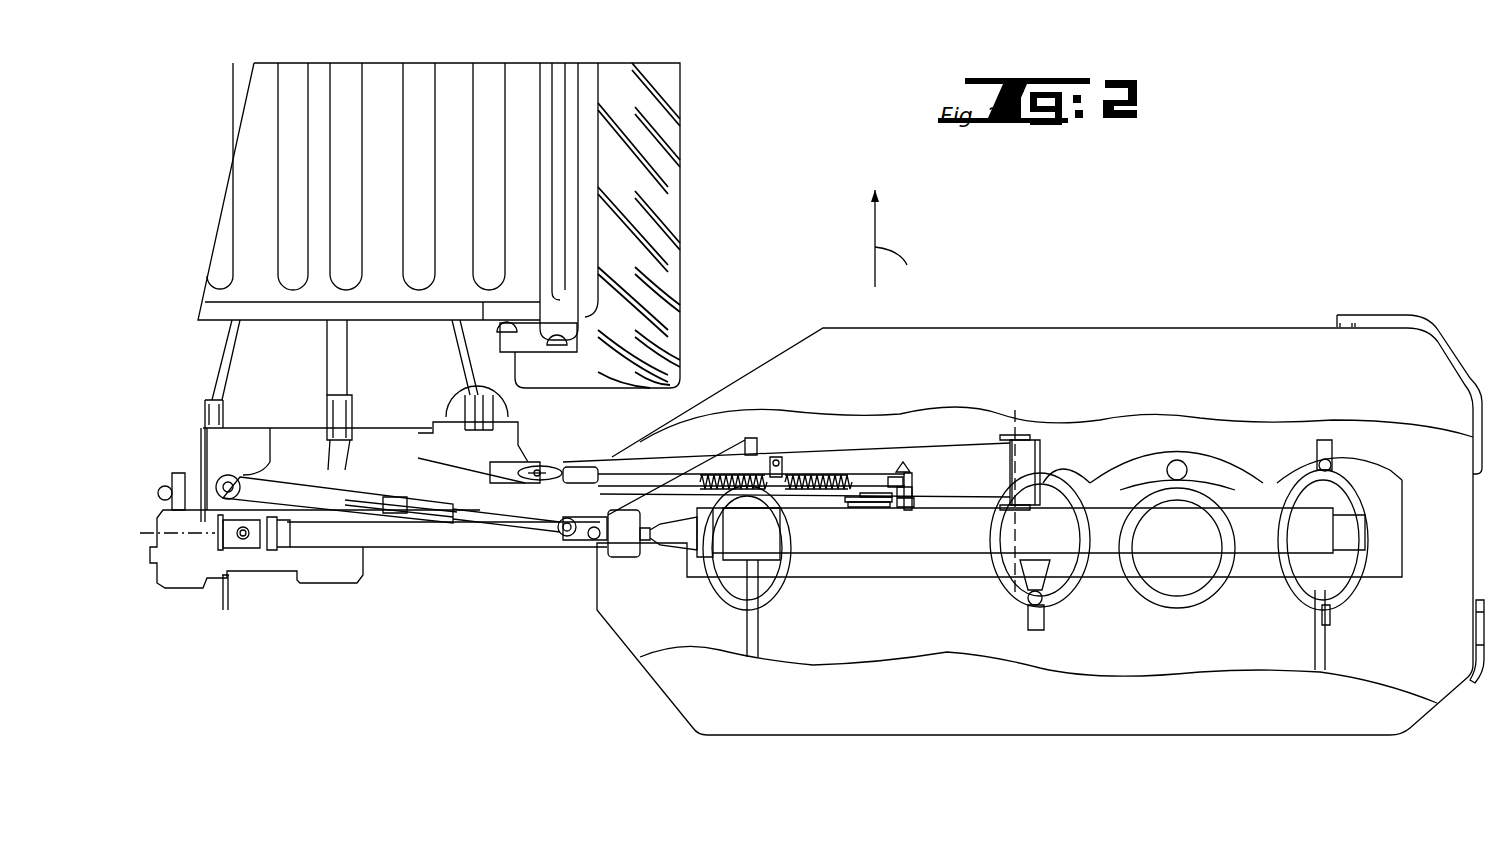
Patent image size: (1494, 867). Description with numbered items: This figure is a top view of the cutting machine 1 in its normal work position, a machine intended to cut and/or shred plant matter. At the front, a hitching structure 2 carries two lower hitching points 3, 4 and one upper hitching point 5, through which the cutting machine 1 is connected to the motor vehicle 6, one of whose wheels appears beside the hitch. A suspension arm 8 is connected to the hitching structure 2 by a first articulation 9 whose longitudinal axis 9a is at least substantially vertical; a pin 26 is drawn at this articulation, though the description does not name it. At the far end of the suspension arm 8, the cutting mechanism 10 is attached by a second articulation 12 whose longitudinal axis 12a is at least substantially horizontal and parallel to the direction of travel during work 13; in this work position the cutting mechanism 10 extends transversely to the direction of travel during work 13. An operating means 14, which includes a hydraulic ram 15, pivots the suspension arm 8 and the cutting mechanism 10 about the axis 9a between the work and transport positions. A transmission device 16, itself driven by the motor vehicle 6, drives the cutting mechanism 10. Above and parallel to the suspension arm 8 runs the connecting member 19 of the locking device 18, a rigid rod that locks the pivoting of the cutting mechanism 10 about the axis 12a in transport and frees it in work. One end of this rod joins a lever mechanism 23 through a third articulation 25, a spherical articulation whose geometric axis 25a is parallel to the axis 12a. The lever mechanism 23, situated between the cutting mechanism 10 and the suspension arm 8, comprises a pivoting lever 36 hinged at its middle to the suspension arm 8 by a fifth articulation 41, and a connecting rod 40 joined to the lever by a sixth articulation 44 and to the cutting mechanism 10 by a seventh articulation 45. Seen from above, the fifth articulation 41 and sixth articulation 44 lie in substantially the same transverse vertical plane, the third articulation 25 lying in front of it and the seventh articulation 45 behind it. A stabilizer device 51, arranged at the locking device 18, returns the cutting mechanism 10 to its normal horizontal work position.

The cutting machine 1 is at (1360, 312).
The hitching structure 2 is at (297, 427).
The lower hitching point 3 is at (200, 408).
The lower hitching point 4 is at (463, 413).
The upper hitching point 5 is at (348, 420).
The motor vehicle 6 is at (682, 213).
The suspension arm 8 is at (870, 447).
The first articulation 9 is at (548, 469).
The longitudinal axis 9a is at (522, 535).
The cutting mechanism 10 is at (1140, 737).
The second articulation 12 is at (1040, 458).
The longitudinal axis 12a is at (1032, 412).
The direction of travel during work 13 is at (898, 243).
The operating means 14 is at (293, 518).
The hydraulic ram 15 is at (270, 483).
The transmission device 16 is at (363, 587).
The locking device 18 is at (658, 465).
The connecting member 19 is at (643, 463).
The lever mechanism 23 is at (915, 487).
The third articulation 25 is at (892, 477).
The geometric axis 25a is at (927, 418).
The pivot pin 26 is at (540, 462).
The pivoting lever 36 is at (913, 498).
The connecting rod 40 is at (868, 510).
The fifth articulation 41 is at (913, 507).
The sixth articulation 44 is at (847, 510).
The seventh articulation 45 is at (888, 510).
The stabilizer device 51 is at (723, 473).